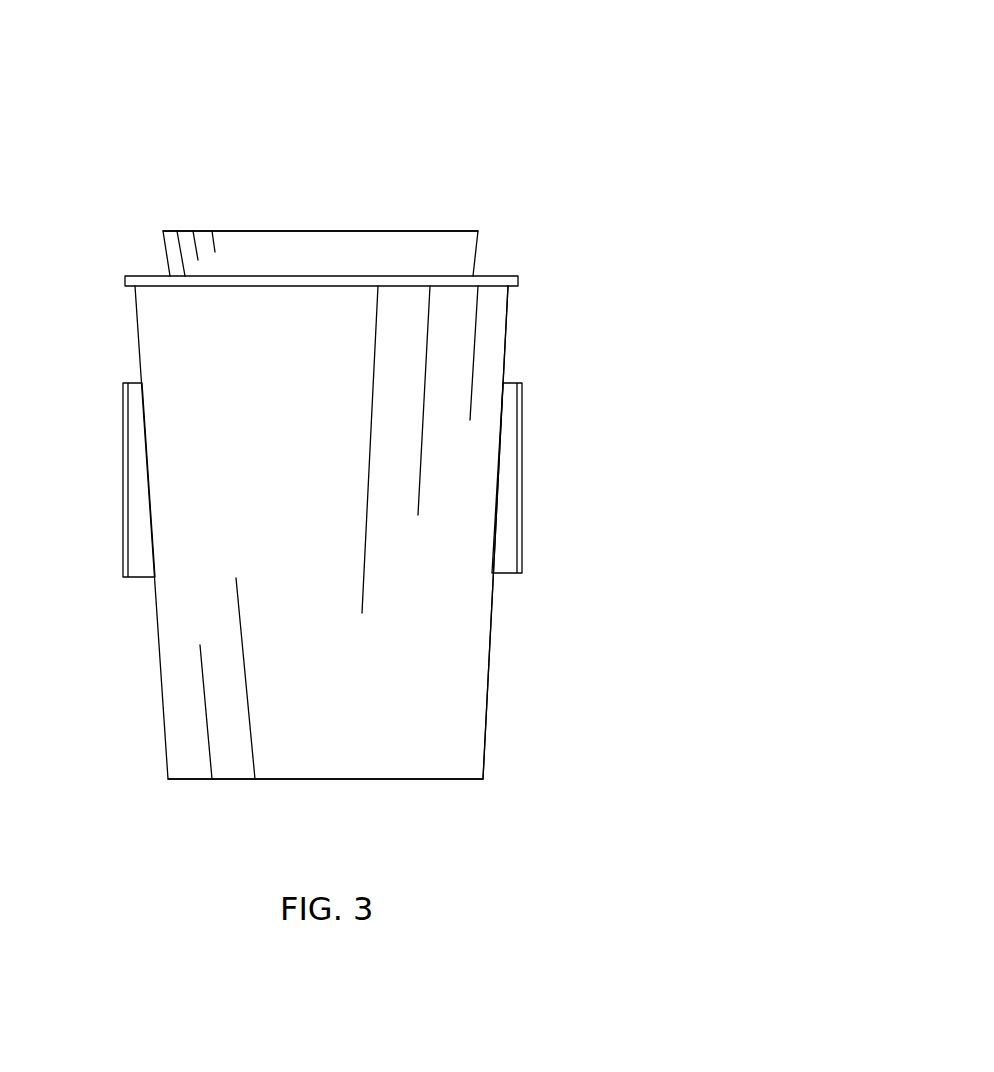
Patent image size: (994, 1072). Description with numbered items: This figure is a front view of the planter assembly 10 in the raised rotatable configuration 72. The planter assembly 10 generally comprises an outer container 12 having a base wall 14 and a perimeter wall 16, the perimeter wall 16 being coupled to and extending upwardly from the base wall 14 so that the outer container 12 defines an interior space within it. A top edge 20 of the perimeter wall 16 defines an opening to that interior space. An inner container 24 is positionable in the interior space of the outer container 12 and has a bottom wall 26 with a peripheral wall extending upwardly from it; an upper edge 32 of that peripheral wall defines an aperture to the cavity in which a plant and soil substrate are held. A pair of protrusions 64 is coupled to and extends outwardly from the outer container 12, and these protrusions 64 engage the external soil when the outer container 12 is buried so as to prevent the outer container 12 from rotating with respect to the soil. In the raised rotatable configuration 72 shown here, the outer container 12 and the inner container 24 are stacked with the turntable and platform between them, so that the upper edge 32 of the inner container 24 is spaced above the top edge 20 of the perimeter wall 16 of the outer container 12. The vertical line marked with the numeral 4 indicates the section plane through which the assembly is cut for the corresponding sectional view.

The planter assembly 10 is at (421, 92).
The outer container 12 is at (533, 780).
The base wall 14 is at (403, 779).
The perimeter wall 16 is at (420, 710).
The top edge 20 is at (497, 276).
The inner container 24 is at (490, 216).
The bottom wall 26 is at (187, 256).
The upper edge 32 is at (207, 231).
The pair of protrusions 64 is at (142, 488).
The raised rotatable configuration 72 is at (190, 825).
The section line 4- 4 is at (282, 203).